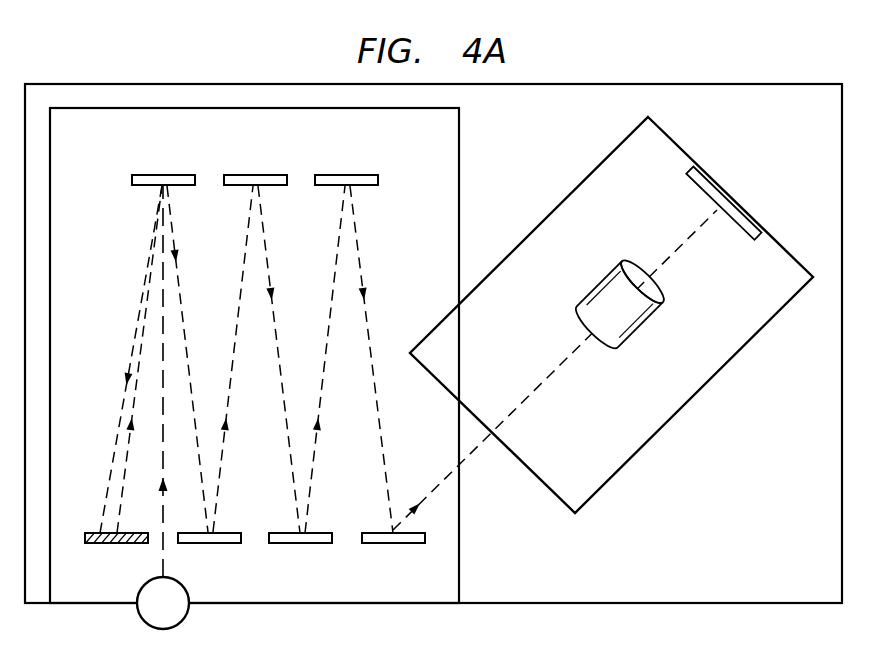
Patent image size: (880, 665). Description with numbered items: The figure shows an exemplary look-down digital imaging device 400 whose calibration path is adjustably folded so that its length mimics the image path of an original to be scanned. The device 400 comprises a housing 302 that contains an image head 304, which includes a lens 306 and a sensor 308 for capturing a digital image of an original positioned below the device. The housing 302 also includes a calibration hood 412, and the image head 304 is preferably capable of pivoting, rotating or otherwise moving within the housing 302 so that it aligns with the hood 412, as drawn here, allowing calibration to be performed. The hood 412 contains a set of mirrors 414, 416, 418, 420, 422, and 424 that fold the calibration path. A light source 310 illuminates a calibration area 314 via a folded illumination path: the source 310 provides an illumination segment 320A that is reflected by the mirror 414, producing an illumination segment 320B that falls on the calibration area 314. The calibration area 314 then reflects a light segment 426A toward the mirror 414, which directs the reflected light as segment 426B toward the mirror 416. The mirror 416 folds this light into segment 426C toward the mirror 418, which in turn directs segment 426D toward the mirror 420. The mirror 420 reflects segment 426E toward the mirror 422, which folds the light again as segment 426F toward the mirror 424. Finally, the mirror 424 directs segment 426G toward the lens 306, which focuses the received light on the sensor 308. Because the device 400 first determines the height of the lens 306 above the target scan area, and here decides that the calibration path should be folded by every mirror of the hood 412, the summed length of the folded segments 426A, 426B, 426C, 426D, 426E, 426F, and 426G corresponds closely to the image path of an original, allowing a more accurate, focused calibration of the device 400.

The look-down digital imaging device 400 is at (136, 68).
The housing 302 is at (740, 83).
The image head 304 is at (687, 402).
The lens 306 is at (638, 326).
The sensor 308 is at (702, 192).
The light source 310 is at (138, 620).
The calibration area 314 is at (108, 546).
The illumination segment 320A is at (165, 568).
The illumination segment 320B is at (137, 340).
The calibration hood 412 is at (460, 182).
The mirror 414 is at (163, 173).
The mirror 416 is at (227, 532).
The mirror 418 is at (253, 173).
The mirror 420 is at (300, 547).
The mirror 422 is at (345, 173).
The mirror 424 is at (392, 547).
The light segment 426A is at (122, 493).
The light segment 426B is at (177, 303).
The light segment 426C is at (243, 263).
The light segment 426D is at (265, 263).
The light segment 426E is at (312, 450).
The light segment 426F is at (357, 265).
The light segment 426G is at (438, 488).